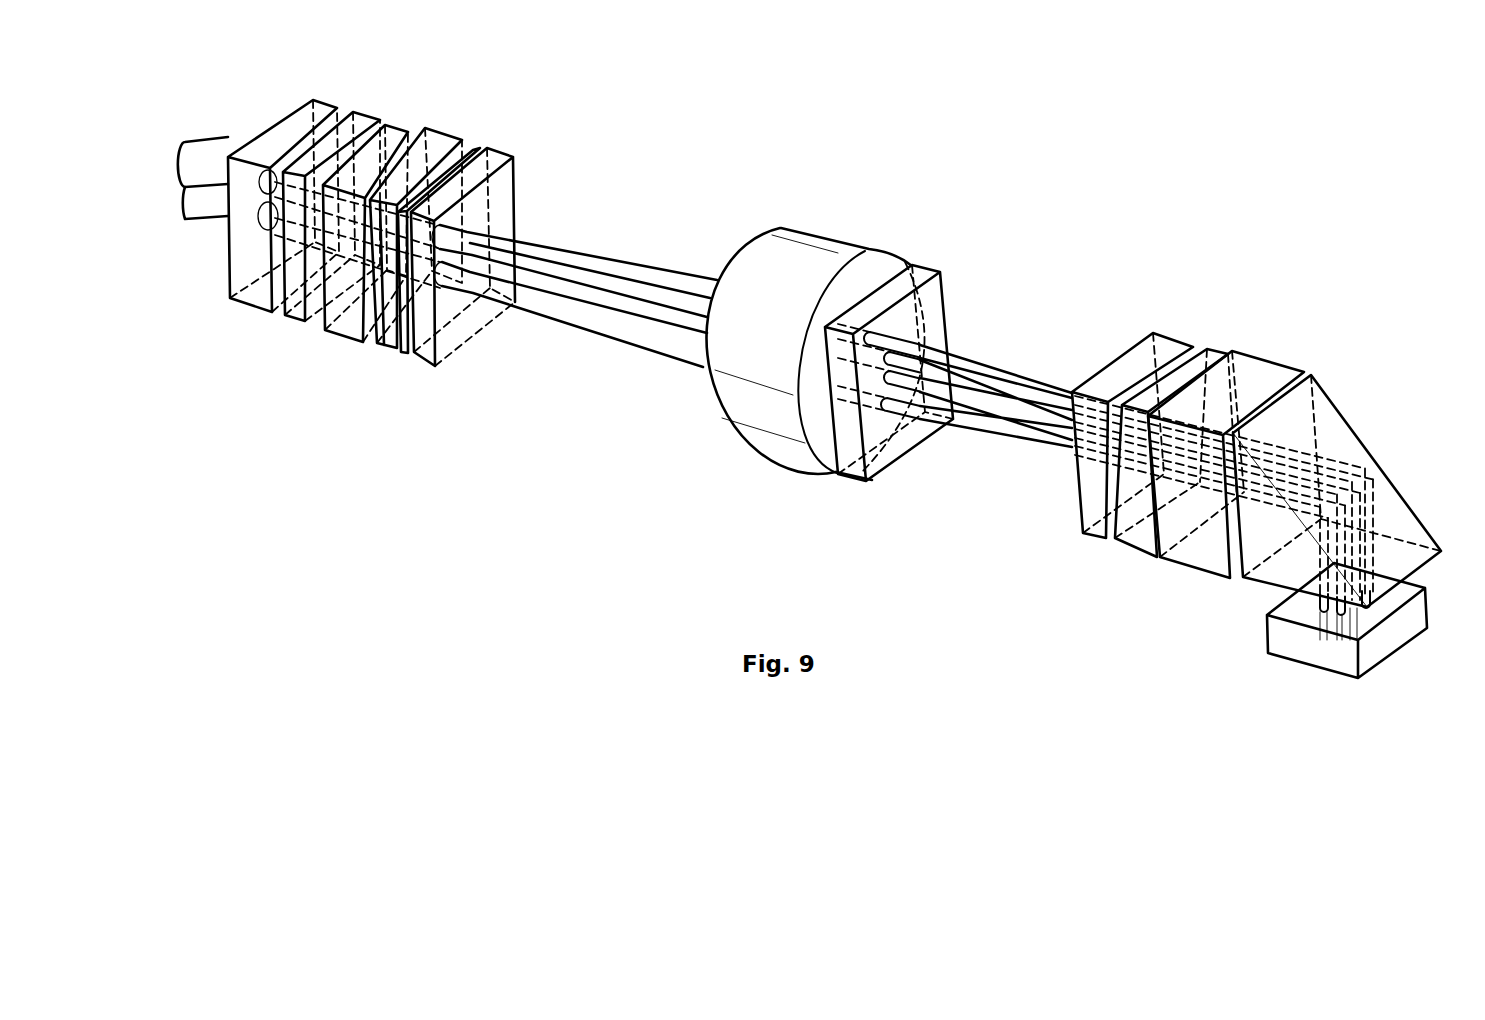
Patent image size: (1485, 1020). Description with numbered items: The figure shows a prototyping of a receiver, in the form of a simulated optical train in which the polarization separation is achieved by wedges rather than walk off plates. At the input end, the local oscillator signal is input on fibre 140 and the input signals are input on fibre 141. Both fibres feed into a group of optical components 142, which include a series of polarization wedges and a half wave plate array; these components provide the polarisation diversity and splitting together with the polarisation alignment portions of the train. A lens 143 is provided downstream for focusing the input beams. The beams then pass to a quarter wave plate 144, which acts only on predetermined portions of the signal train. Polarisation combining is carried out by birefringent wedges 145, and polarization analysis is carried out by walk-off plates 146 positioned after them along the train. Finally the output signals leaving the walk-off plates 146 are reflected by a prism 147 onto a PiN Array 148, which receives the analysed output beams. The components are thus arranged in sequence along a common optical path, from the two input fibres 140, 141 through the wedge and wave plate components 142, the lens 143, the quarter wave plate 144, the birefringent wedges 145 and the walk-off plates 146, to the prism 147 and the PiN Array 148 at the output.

The fibre 140 is at (187, 222).
The fibre 141 is at (187, 140).
The optical components 142 is at (412, 400).
The lens 143 is at (747, 445).
The quarter wave plate 144 is at (902, 455).
The birefringent wedges 145 is at (1150, 577).
The walk-off plates 146 is at (1196, 568).
The prism 147 is at (1350, 421).
The PiN Array 148 is at (1383, 662).